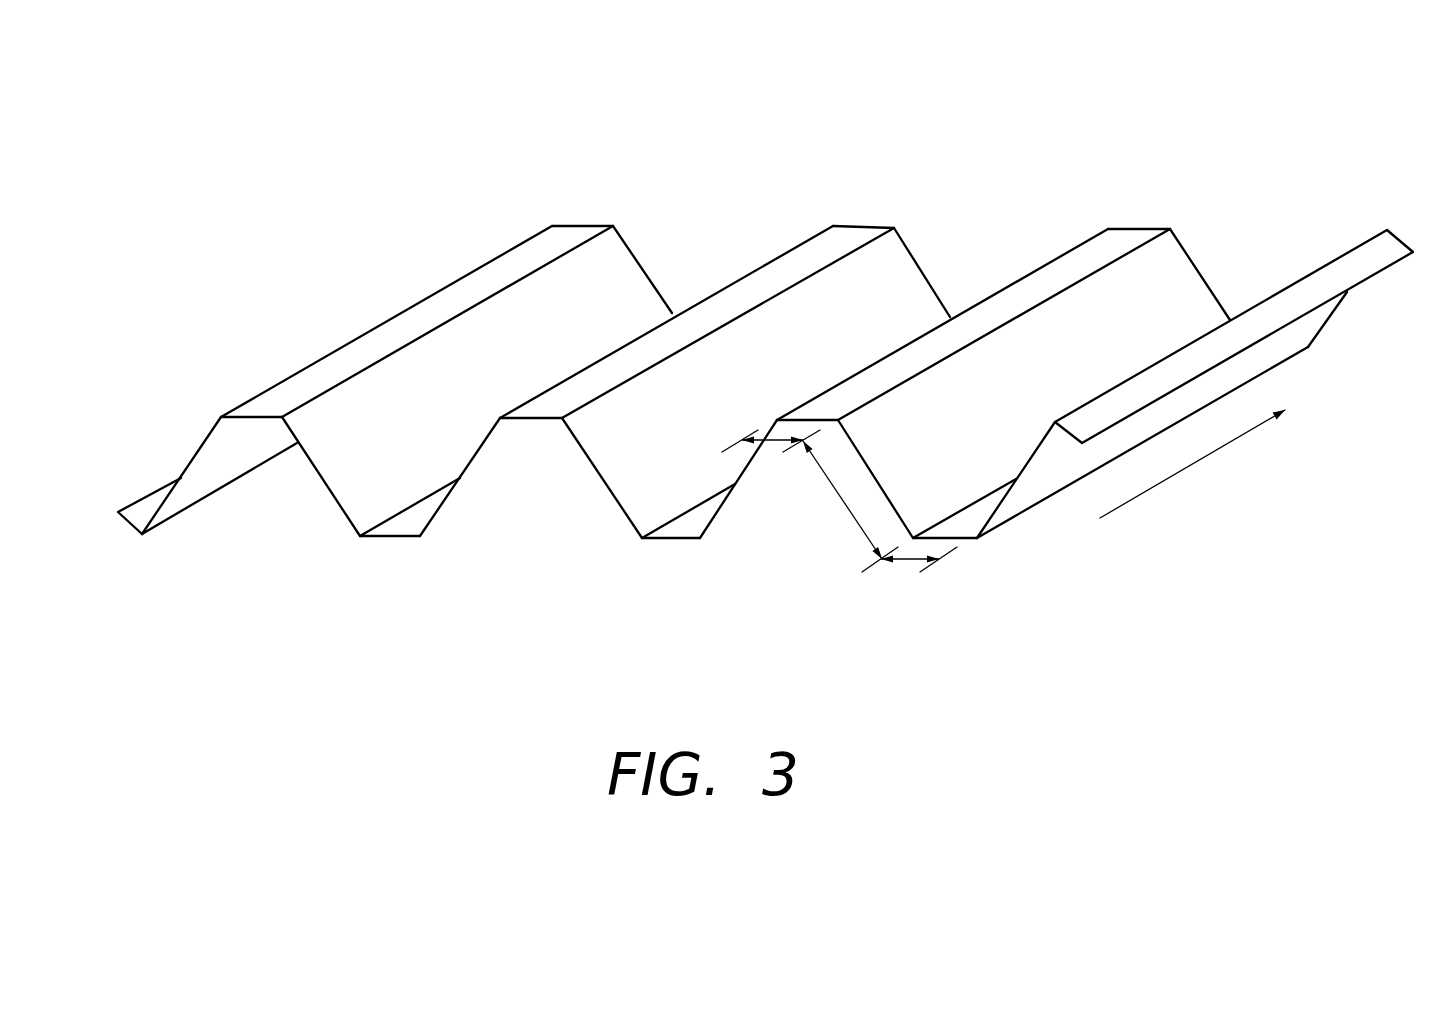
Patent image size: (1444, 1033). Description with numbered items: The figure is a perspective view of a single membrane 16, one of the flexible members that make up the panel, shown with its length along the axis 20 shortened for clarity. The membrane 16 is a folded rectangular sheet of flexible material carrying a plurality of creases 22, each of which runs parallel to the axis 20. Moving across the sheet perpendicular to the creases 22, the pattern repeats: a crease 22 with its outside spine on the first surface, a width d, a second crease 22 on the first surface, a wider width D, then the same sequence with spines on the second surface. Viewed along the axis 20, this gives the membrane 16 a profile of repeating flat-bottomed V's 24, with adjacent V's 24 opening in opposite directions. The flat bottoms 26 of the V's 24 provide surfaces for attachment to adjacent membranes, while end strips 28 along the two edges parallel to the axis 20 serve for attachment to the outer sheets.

The membrane 16 is at (325, 223).
The axis 20 is at (1192, 464).
The creases 22 is at (527, 277).
The flat-bottomed V's 24 is at (790, 345).
The flat bottoms 26 is at (573, 233).
The end strips 28 is at (130, 525).
The width d is at (767, 442).
The width D is at (837, 502).